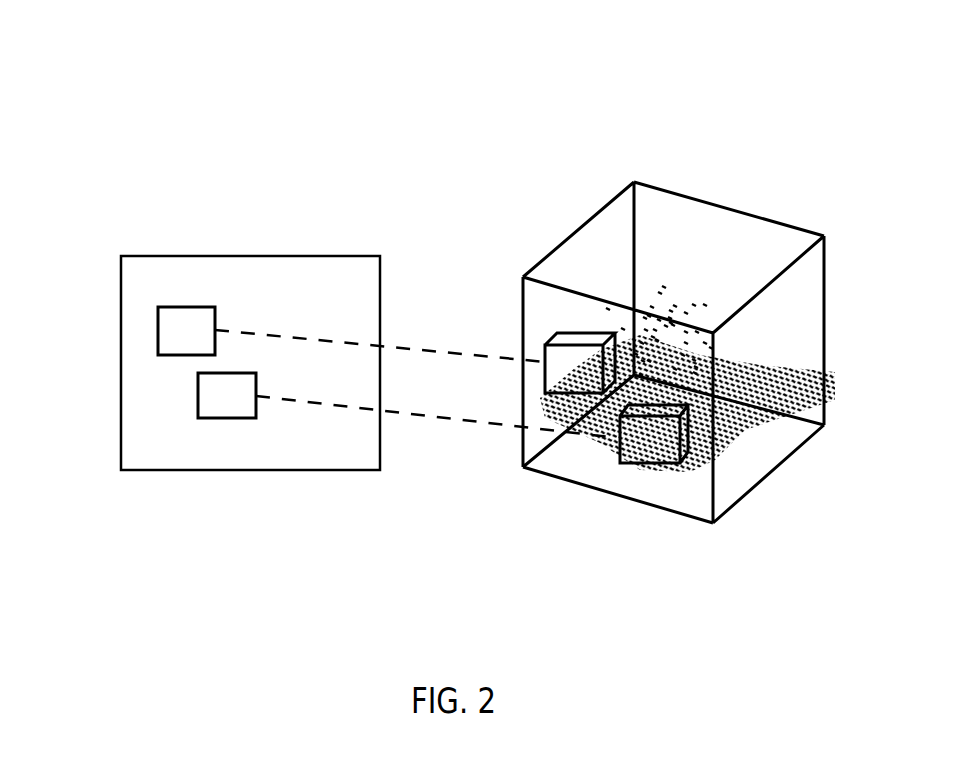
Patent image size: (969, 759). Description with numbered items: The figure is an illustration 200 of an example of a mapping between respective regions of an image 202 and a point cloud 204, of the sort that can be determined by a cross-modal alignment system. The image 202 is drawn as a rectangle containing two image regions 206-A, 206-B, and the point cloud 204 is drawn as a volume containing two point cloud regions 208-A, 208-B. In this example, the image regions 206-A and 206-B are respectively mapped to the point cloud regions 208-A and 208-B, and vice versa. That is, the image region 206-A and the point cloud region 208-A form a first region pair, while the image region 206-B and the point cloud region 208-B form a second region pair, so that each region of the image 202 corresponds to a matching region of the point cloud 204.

The illustration 200 is at (124, 66).
The image 202 is at (287, 518).
The point cloud 204 is at (779, 570).
The image region 206-A is at (149, 331).
The image region 206-B is at (190, 402).
The point cloud region 208-A is at (628, 354).
The point cloud region 208-B is at (698, 427).